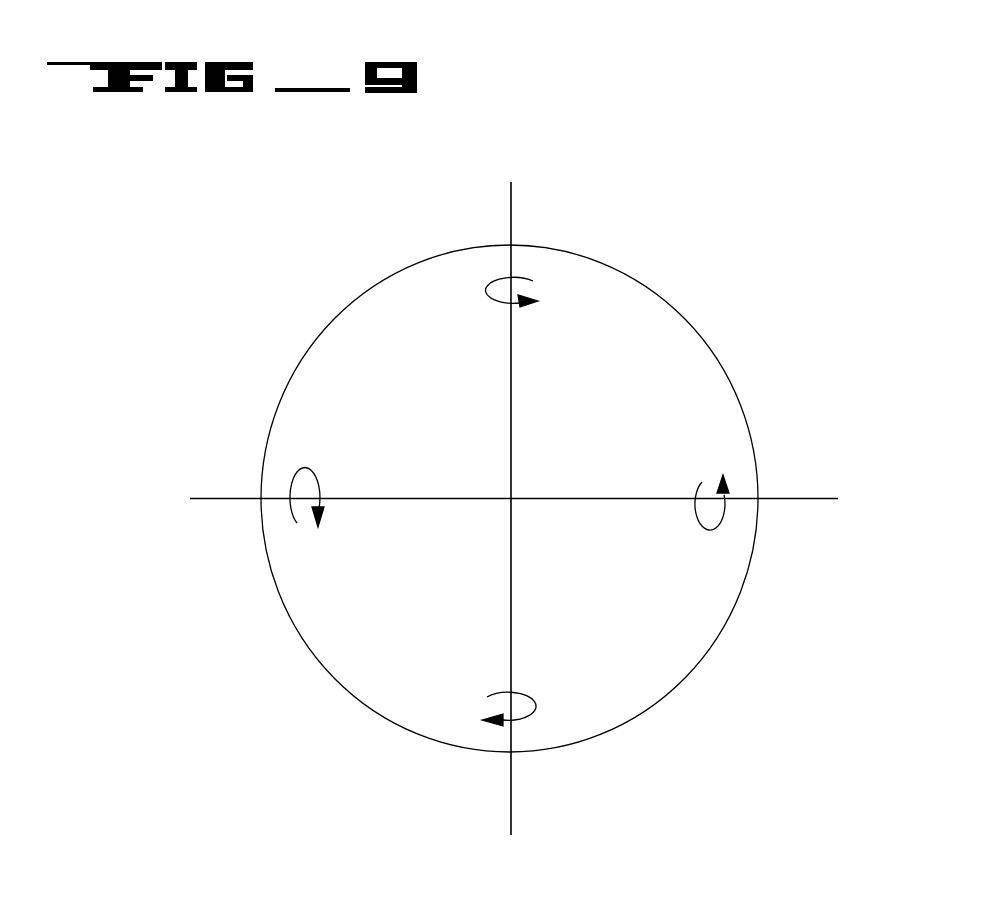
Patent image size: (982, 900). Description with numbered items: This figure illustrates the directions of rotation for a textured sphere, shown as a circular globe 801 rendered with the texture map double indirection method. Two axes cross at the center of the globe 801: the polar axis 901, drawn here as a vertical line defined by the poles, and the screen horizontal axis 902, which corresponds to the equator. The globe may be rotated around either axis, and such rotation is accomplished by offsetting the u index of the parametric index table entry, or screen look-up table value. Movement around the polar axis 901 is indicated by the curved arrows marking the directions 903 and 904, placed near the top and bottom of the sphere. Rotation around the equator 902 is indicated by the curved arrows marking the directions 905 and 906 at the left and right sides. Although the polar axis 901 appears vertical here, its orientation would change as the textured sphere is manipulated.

The sphere / circular body 801 is at (728, 373).
The polar axis 901 is at (513, 213).
The screen horizontal axis 902 is at (823, 497).
The direction 903 is at (543, 287).
The direction 904 is at (488, 727).
The direction 905 is at (293, 527).
The direction 906 is at (725, 533).